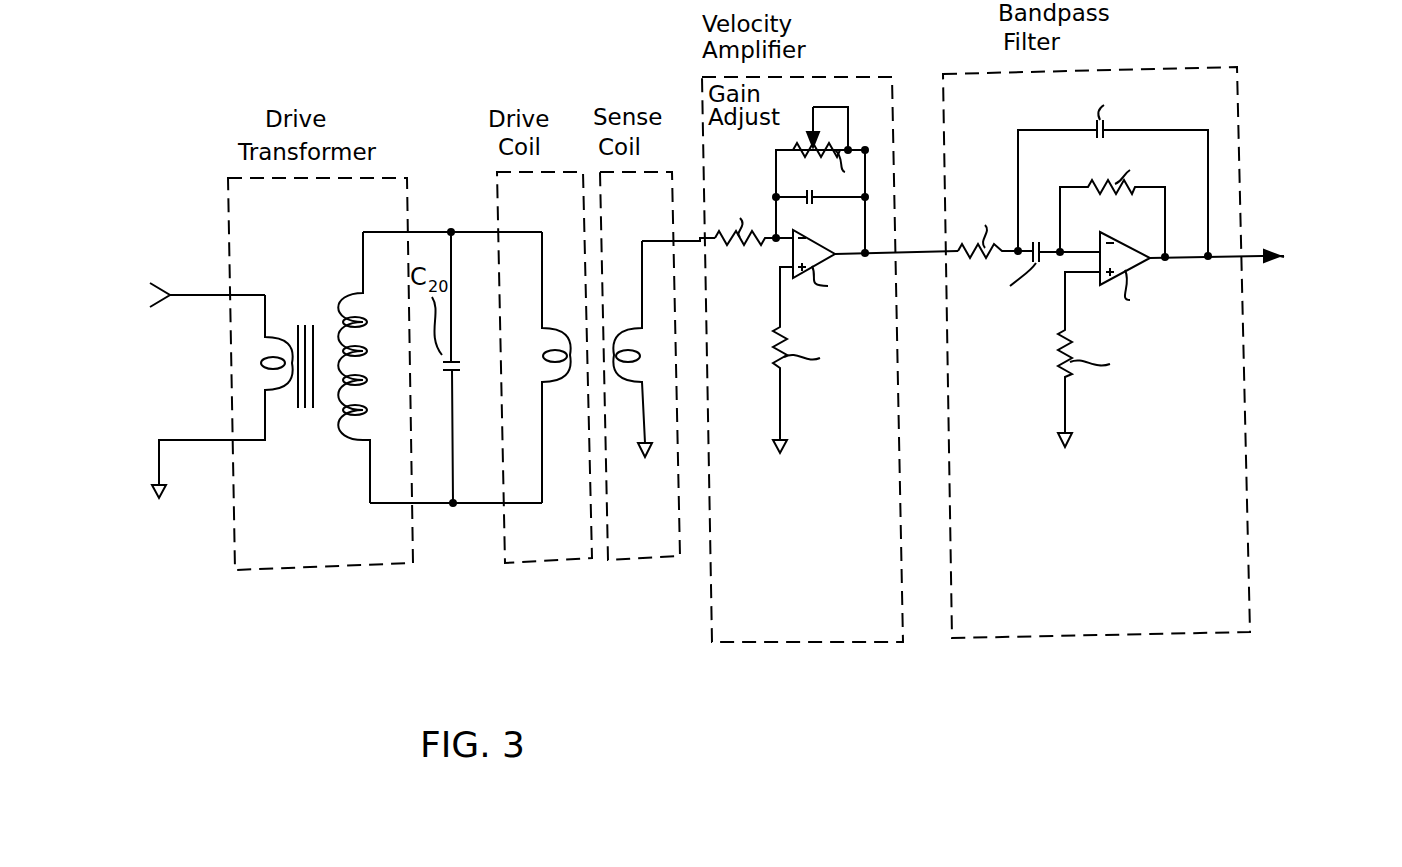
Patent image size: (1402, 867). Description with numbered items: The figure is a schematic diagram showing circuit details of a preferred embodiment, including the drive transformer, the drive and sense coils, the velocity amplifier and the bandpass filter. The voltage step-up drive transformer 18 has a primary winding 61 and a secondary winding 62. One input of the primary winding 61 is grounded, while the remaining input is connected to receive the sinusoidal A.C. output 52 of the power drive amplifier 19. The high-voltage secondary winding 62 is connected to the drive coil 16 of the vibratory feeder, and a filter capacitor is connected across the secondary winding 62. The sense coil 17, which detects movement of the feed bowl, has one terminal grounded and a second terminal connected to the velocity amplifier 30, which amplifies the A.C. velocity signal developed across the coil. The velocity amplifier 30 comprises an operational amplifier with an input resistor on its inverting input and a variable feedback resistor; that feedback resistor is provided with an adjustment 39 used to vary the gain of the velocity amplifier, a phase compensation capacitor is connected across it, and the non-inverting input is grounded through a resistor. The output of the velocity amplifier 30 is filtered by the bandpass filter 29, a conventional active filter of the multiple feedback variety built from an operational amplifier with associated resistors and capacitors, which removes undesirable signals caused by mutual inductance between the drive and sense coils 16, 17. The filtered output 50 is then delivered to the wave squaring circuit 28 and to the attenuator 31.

The drive coil 16 is at (540, 563).
The sense coil 17 is at (632, 560).
The drive transformer 18 is at (323, 570).
The power drive amplifier 19 is at (124, 307).
The wave squaring circuit 28 is at (1314, 284).
The bandpass filter 29 is at (1075, 638).
The velocity amplifier 30 is at (815, 642).
The attenuator 31 is at (1320, 309).
The adjustment 39 is at (830, 106).
The output 50 is at (1246, 253).
The sinusoidal A.C. output 52 is at (179, 294).
The primary winding 61 is at (265, 294).
The secondary winding 62 is at (340, 298).